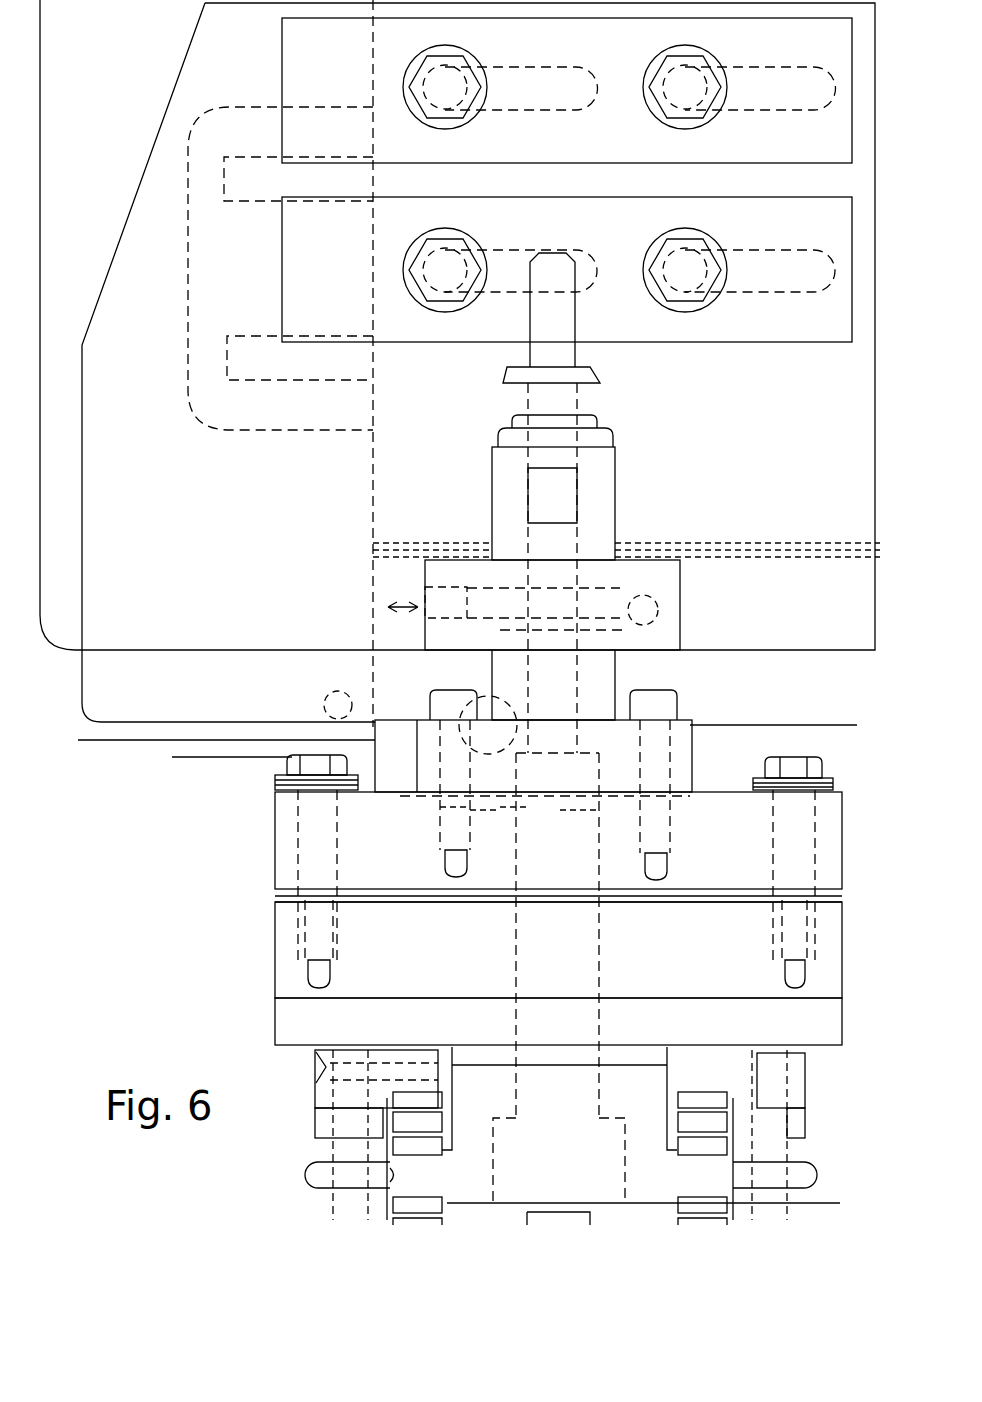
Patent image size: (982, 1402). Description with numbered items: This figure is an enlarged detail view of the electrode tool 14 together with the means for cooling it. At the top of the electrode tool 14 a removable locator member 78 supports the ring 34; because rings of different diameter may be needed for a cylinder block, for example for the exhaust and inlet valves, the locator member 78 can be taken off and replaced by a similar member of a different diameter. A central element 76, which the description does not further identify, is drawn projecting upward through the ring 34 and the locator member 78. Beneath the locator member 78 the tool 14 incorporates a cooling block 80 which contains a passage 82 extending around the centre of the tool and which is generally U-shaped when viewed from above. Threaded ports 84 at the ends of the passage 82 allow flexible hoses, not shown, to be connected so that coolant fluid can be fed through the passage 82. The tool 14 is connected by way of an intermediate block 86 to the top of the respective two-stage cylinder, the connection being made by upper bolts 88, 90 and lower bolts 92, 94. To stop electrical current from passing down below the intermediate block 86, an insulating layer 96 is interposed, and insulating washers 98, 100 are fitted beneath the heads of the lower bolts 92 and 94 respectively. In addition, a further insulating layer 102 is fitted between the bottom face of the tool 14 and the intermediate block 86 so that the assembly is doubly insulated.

The electrode tool 14 is at (437, 495).
The ring 34 is at (600, 372).
The pin 76 is at (560, 322).
The removable locator member 78 is at (600, 460).
The cooling block 80 is at (680, 600).
The passage 82 is at (680, 630).
The threaded ports 84 is at (425, 596).
The intermediate block 86 is at (515, 868).
The upper bolt 88 is at (487, 695).
The upper bolt 90 is at (677, 702).
The lower bolt 92 is at (293, 757).
The lower bolt 94 is at (805, 757).
The insulating layer 96 is at (275, 898).
The insulating washer 98 is at (275, 780).
The insulating washer 100 is at (832, 787).
The insulating layer 102 is at (487, 808).